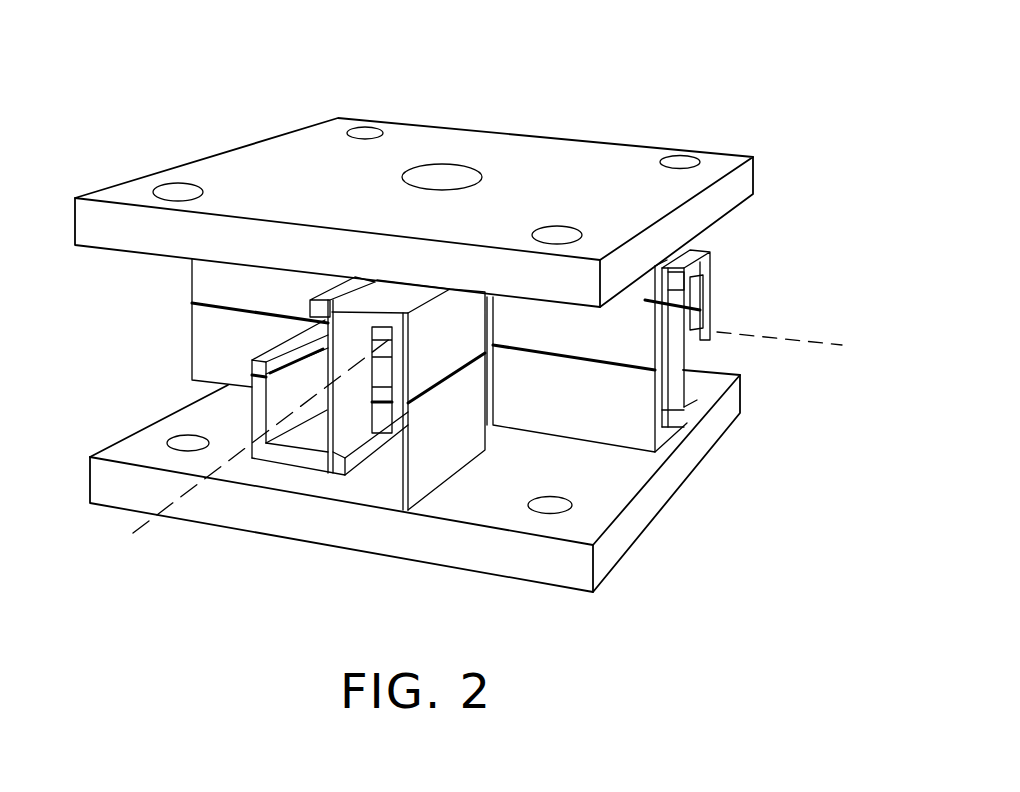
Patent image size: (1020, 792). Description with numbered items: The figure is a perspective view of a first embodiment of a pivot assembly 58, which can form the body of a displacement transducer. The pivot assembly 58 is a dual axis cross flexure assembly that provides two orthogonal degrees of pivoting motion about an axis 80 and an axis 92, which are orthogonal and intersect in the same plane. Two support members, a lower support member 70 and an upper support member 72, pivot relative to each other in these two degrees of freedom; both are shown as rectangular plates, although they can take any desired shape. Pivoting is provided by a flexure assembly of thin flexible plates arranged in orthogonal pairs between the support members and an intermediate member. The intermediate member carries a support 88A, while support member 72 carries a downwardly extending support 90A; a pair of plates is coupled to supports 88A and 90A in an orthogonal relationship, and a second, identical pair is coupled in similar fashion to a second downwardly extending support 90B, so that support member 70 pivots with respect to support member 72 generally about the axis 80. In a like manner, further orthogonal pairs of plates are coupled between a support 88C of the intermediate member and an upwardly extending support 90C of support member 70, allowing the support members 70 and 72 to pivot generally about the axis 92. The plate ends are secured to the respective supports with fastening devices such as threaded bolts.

The pivot assembly 58 is at (817, 132).
The support member 72 is at (587, 138).
The support member 70 is at (672, 493).
The support 90A is at (672, 427).
The support 90B is at (190, 365).
The support 90C is at (385, 474).
The support 88A is at (708, 303).
The support 88C is at (253, 397).
The axis 80 is at (798, 337).
The axis 92 is at (152, 523).